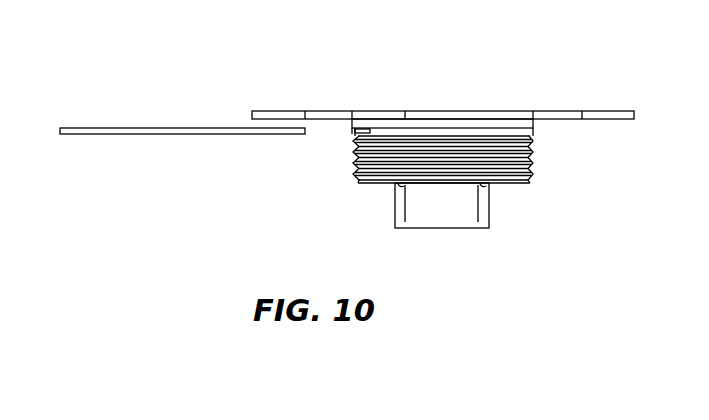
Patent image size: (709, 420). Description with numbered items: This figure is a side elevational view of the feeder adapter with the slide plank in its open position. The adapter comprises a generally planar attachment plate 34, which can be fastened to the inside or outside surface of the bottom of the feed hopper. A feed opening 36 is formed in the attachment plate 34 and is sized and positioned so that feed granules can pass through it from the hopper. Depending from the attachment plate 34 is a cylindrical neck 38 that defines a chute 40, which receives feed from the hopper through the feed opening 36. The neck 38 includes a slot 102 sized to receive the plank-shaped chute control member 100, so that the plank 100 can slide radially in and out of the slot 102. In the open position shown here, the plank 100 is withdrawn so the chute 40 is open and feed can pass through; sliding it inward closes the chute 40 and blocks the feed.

The chute control member 100 is at (160, 127).
The attachment plate 34 is at (603, 112).
The feed opening 36 is at (470, 119).
The cylindrical neck 38 is at (533, 164).
The chute 40 is at (475, 205).
The slot 102 is at (352, 133).